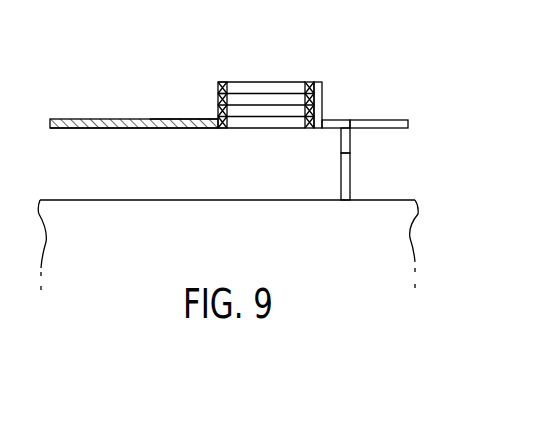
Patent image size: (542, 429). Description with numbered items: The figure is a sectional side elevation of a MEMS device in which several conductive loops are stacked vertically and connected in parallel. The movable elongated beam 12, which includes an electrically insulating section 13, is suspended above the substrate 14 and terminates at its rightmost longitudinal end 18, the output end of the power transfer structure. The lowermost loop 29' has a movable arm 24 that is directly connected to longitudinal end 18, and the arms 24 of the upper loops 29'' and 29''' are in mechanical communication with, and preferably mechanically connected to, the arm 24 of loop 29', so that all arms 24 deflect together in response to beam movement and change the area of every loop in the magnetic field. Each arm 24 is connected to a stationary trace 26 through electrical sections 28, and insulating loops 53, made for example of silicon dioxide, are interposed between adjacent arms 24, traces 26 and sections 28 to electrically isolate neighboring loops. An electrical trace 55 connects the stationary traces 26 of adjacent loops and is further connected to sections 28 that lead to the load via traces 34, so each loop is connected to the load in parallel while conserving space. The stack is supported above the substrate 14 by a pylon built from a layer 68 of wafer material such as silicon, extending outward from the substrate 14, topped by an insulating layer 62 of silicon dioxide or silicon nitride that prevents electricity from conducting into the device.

The movable elongated beam 12 is at (88, 117).
The section 13 is at (127, 129).
The substrate 14 is at (413, 235).
The rightmost longitudinal end 18 is at (180, 130).
The movable arm 24 is at (230, 102).
The stationary trace 26 is at (289, 106).
The electrical section 28 is at (341, 120).
The lowermost loop 29' is at (210, 160).
The upper loop 29'' is at (182, 83).
The upper loop 29''' is at (237, 47).
The trace 34 is at (380, 120).
The insulating loop 53 is at (214, 88).
The electrical trace 55 is at (322, 92).
The insulating layer 62 is at (351, 140).
The layer of wafer material 68 is at (351, 185).